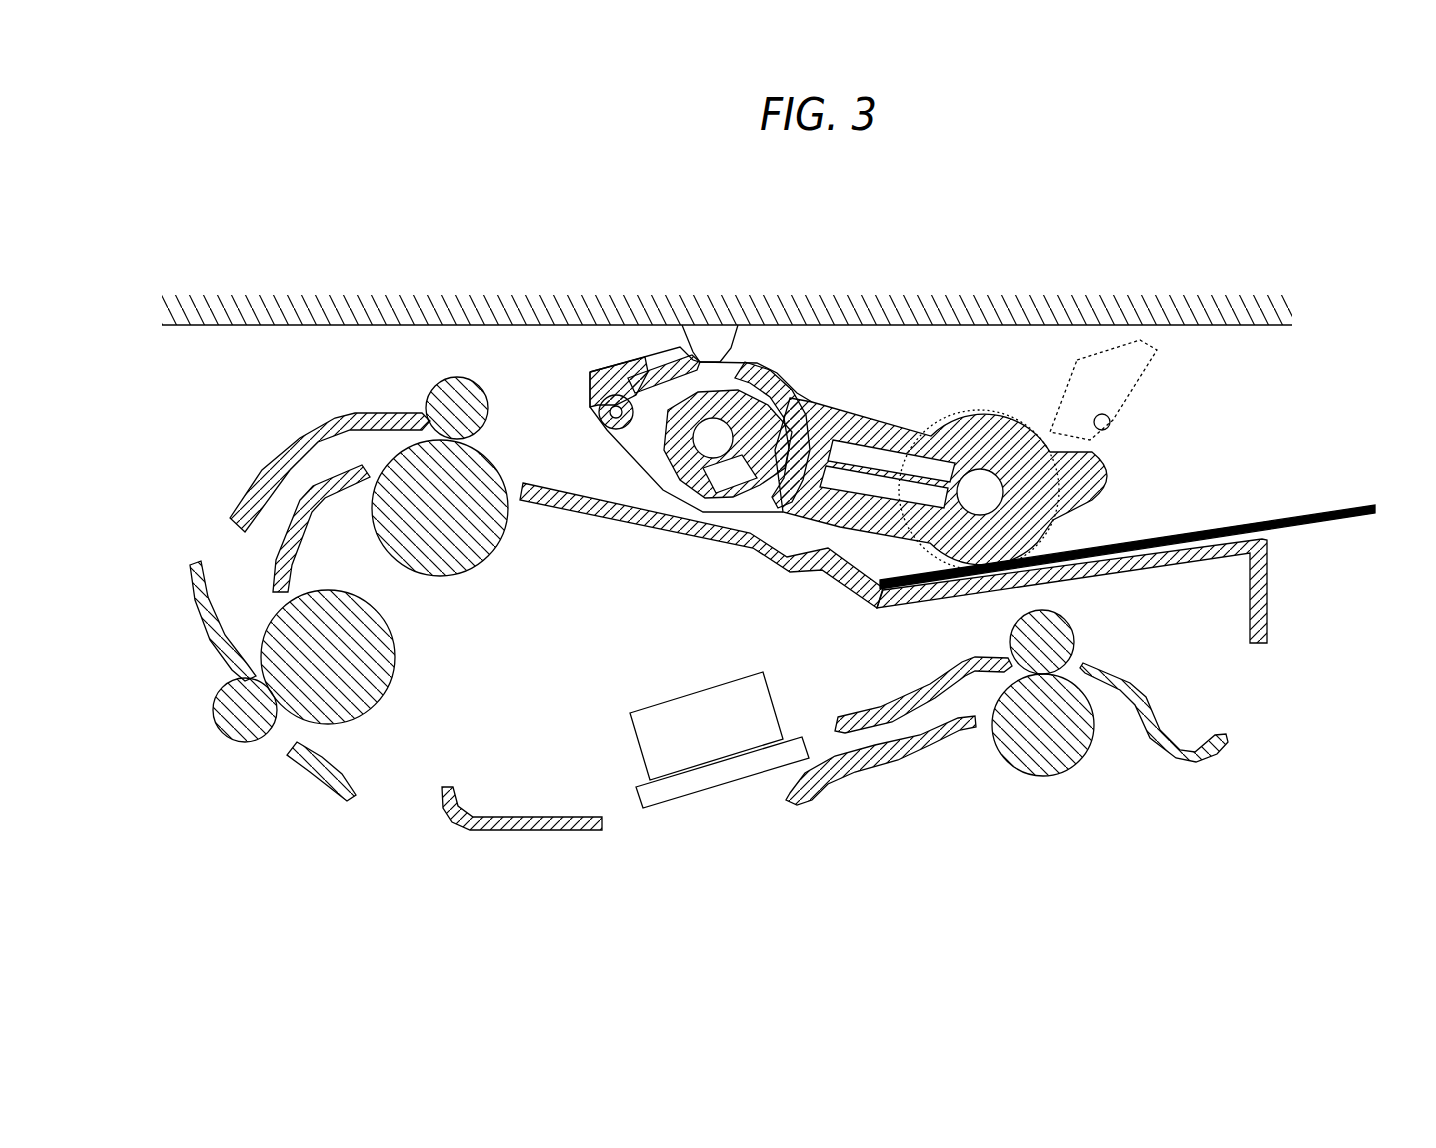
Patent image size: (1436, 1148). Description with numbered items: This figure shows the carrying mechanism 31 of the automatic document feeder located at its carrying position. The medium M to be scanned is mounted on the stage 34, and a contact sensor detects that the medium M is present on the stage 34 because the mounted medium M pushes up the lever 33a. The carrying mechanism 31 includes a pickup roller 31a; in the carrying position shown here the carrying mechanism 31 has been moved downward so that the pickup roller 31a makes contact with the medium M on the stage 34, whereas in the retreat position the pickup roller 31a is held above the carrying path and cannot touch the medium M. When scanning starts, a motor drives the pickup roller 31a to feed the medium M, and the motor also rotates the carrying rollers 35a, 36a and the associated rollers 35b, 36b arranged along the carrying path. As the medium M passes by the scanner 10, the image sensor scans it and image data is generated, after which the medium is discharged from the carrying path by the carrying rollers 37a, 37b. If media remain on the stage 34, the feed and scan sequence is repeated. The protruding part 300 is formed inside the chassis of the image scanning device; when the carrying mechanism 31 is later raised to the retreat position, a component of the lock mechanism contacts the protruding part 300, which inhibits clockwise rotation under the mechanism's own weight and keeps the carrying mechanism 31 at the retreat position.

The protruding part 300 is at (710, 338).
The carrying mechanism 31 is at (881, 381).
The pickup roller 31a is at (955, 413).
The lever 33a is at (1077, 360).
The stage 34 is at (1213, 553).
The medium M is at (1357, 506).
The carrying roller 35a is at (440, 508).
The pinch roller 35b is at (457, 408).
The carrying roller 36a is at (328, 657).
The pinch roller 36b is at (245, 710).
The carrying roller 37a is at (1043, 725).
The carrying roller 37b is at (1042, 642).
The scanner 10 is at (668, 767).